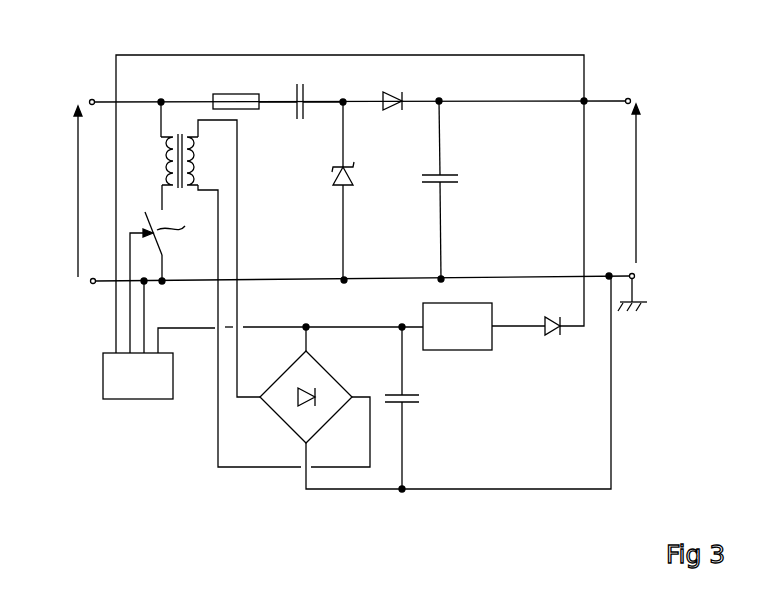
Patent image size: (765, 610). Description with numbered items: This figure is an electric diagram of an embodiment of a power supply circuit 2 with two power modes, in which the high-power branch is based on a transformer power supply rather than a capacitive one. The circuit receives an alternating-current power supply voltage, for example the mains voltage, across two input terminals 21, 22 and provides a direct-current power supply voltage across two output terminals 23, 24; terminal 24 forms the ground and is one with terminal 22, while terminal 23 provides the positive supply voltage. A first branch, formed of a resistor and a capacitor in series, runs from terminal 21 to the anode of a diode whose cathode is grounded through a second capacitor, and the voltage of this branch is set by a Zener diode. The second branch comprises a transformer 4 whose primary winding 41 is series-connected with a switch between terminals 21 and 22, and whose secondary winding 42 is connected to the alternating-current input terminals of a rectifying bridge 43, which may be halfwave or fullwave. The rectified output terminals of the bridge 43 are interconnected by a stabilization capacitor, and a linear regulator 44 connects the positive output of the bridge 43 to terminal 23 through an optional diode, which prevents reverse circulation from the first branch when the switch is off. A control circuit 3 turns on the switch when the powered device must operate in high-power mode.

The power supply circuit 2 is at (131, 482).
The control circuit 3 is at (103, 380).
The transformer 4 is at (205, 107).
The input terminal 21 is at (89, 101).
The input terminal 22 is at (90, 282).
The output terminal 23 is at (631, 99).
The output terminal 24 is at (635, 276).
The primary winding 41 is at (163, 169).
The secondary winding 42 is at (200, 160).
The rectifying bridge 43 is at (328, 369).
The linear regulator 44 is at (447, 351).